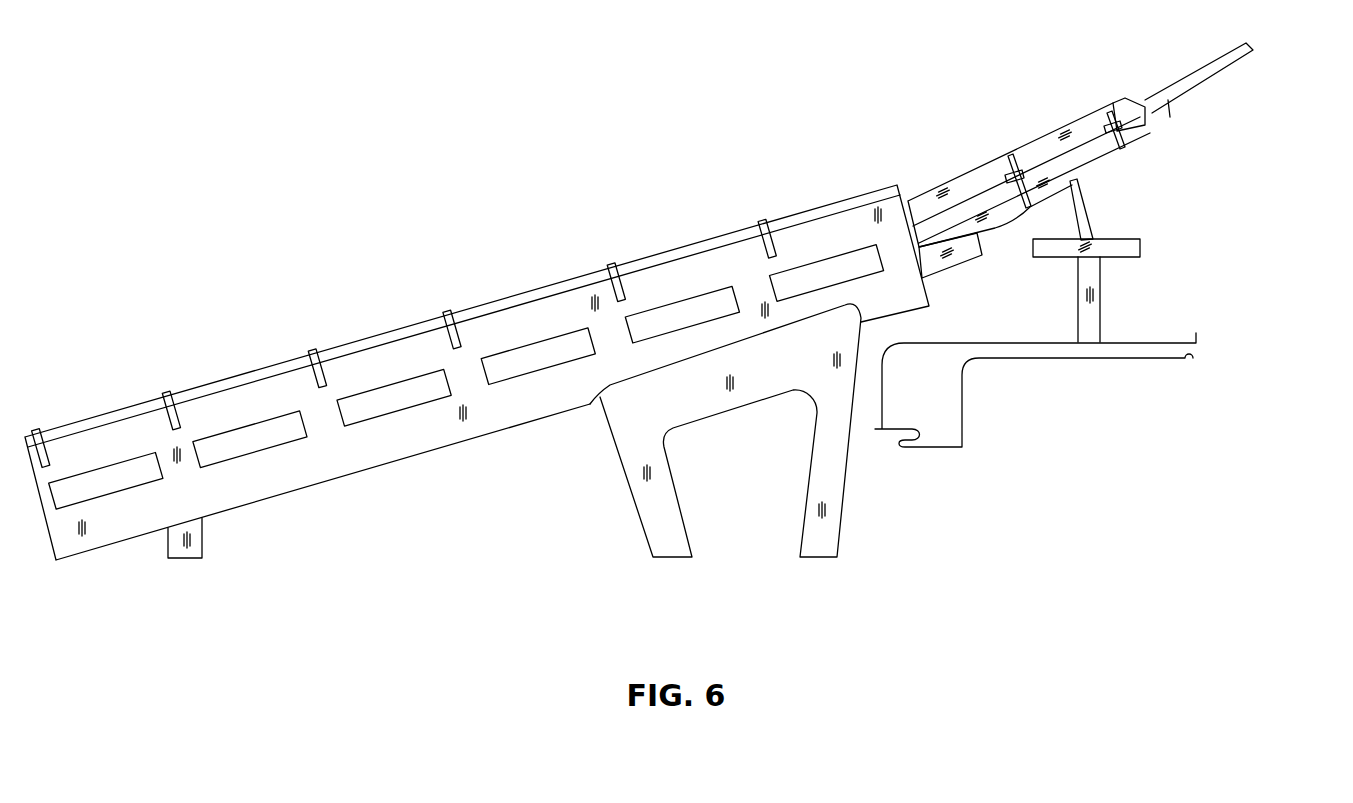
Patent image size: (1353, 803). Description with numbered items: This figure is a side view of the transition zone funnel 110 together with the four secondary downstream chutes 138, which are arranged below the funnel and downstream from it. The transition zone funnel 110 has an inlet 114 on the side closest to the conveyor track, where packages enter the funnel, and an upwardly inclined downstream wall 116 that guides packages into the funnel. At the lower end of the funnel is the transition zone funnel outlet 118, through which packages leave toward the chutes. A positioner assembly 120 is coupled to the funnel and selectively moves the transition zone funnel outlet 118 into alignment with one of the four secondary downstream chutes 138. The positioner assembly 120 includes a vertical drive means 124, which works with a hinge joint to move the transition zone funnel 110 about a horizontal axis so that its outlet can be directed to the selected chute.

The transition zone funnel 110 is at (980, 175).
The inlet 114 is at (1172, 108).
The upwardly inclined downstream wall 116 is at (1053, 148).
The transition zone funnel outlet 118 is at (906, 204).
The positioner assembly 120 is at (1076, 180).
The vertical drive means 124 is at (1087, 222).
The secondary downstream chutes 138 is at (521, 359).